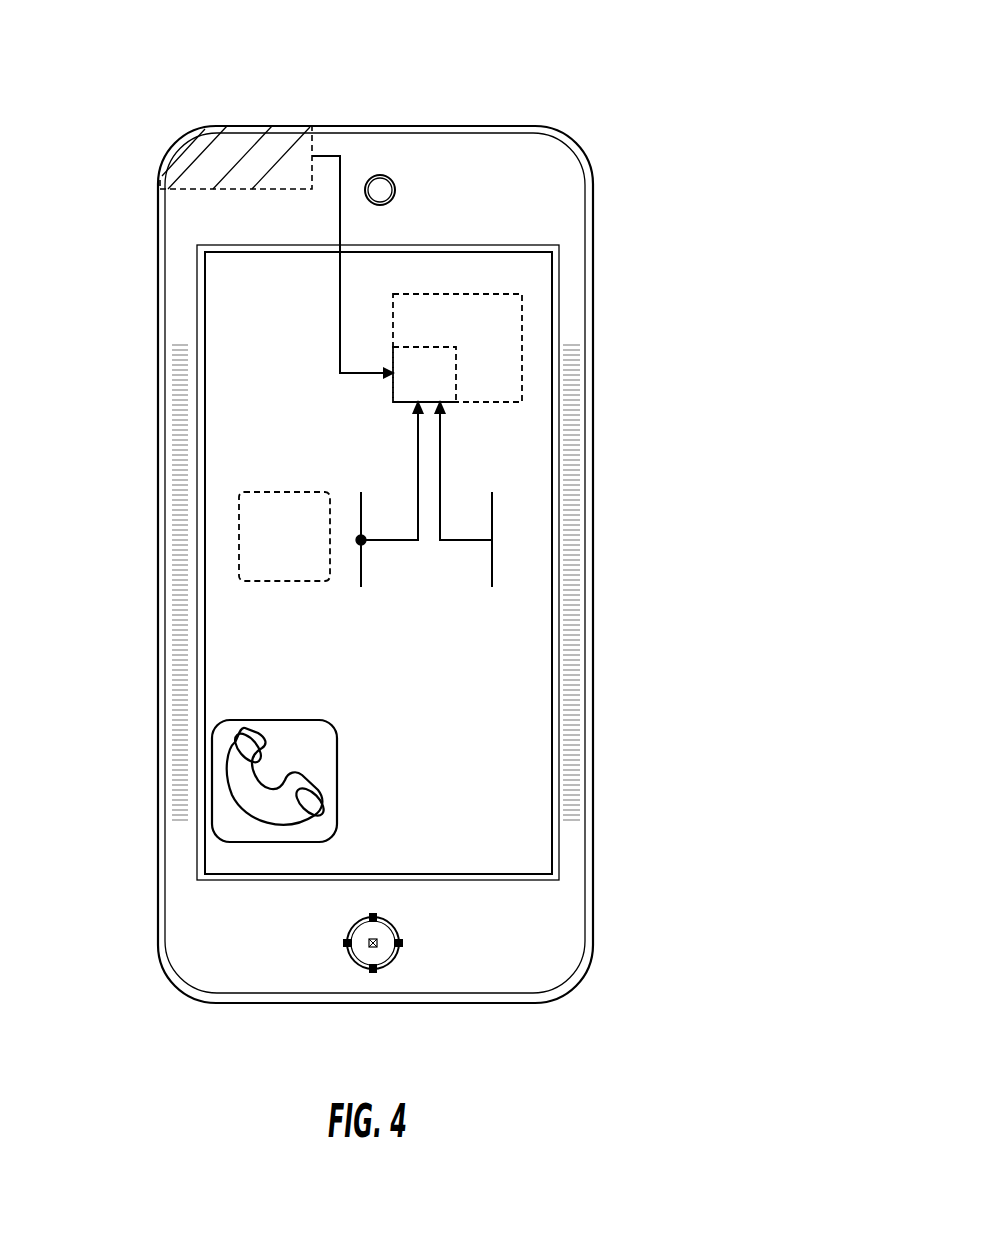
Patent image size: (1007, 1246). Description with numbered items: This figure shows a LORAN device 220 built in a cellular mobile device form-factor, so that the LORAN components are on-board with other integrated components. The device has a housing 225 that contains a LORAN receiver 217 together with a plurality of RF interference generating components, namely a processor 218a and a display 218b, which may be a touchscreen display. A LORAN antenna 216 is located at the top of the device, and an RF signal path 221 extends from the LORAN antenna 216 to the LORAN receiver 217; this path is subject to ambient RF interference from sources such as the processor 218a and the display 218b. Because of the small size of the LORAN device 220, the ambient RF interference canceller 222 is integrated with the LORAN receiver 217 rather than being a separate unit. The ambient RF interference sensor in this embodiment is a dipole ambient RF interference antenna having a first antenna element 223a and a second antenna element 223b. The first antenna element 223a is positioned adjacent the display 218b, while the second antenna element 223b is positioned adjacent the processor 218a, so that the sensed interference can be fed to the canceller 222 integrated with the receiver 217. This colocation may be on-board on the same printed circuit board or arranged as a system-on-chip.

The LORAN antenna 216 is at (170, 152).
The LORAN receiver 217 is at (522, 317).
The processor 218a is at (239, 543).
The display 218b is at (520, 842).
The LORAN device 220 is at (602, 70).
The RF signal path 221 is at (340, 227).
The ambient RF interference canceller 222 is at (456, 385).
The first antenna element of the ambient RF interference antenna 223a is at (492, 527).
The second antenna element of the ambient RF interference antenna 223b is at (361, 565).
The housing 225 is at (593, 824).